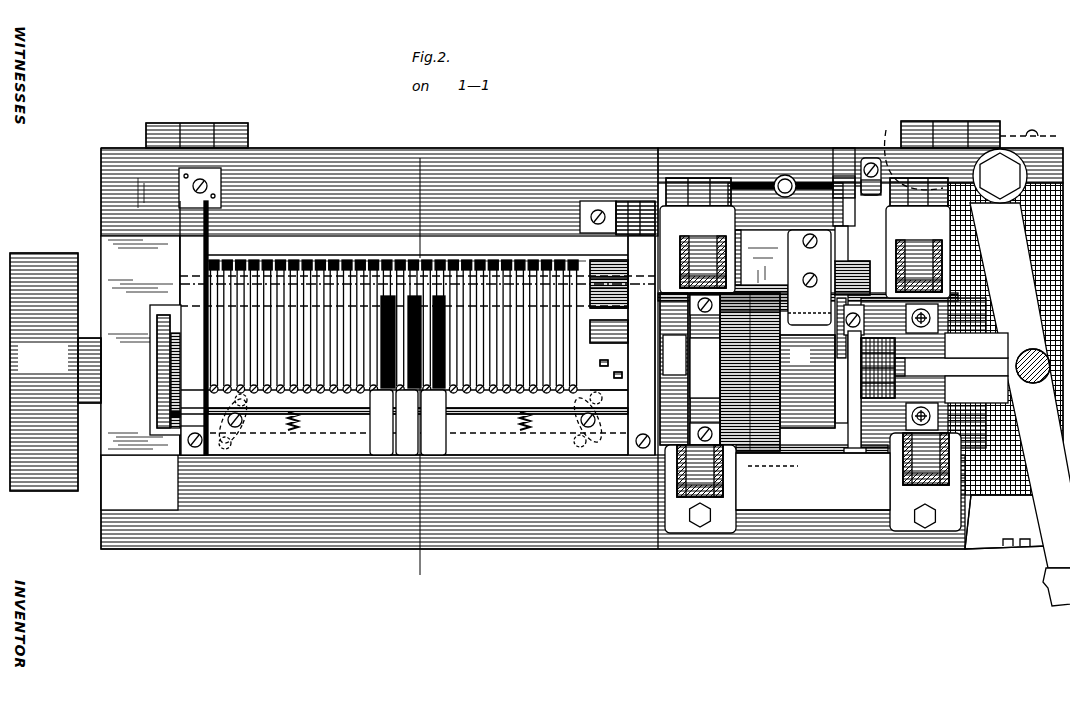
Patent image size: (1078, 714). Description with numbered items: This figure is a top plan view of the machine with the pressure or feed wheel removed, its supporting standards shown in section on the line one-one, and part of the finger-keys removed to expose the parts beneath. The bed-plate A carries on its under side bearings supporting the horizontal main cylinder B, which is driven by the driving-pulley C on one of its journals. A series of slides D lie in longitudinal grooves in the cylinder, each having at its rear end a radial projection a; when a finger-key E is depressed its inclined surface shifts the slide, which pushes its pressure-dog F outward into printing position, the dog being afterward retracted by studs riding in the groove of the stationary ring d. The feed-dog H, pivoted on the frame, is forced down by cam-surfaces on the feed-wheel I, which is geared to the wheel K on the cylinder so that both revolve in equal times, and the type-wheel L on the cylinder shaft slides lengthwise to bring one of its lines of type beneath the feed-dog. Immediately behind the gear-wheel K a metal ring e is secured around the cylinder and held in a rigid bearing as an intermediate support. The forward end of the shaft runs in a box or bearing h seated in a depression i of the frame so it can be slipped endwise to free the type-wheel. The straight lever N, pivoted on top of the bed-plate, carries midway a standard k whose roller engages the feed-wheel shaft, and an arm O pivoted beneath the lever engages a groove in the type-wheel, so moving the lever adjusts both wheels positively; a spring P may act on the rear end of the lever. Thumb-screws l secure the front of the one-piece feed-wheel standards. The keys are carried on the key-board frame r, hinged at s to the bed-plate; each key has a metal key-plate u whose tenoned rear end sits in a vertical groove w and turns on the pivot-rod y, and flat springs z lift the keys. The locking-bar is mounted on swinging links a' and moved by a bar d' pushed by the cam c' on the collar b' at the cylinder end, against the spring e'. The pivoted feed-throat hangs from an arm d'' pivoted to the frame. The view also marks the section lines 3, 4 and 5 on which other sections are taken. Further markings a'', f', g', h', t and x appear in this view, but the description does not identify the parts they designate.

The bed-plate A is at (545, 180).
The main cylinder B is at (584, 335).
The driving-pulley C is at (55, 372).
The slides D is at (622, 350).
The finger-keys E is at (408, 375).
The pressure-dog F is at (807, 389).
The feed-dog H is at (905, 367).
The feed-wheel I is at (805, 238).
The gear-wheel K is at (713, 334).
The type-wheel L is at (869, 405).
The lever N is at (1020, 377).
The arm O is at (951, 367).
The spring P is at (880, 122).
The radial projection a is at (606, 364).
The swinging links a' is at (534, 298).
The shaft a'' is at (806, 187).
The wheel or collar b' is at (152, 370).
The cam c' is at (506, 344).
The stationary ring d is at (794, 373).
The bar d' is at (441, 417).
The arm d'' is at (872, 431).
The ring or collar e is at (674, 369).
The spring e' is at (409, 420).
The screw f' is at (809, 277).
The screw g' is at (816, 294).
The box or bearing h is at (976, 389).
The nut h' is at (861, 315).
The depression i is at (976, 345).
The standard k is at (1025, 375).
The thumb-screws l is at (813, 483).
The key-board frame r is at (417, 347).
The hinge s is at (417, 311).
The screw t is at (187, 440).
The key-plate u is at (397, 326).
The vertical grooves w is at (603, 273).
The pivot bar x is at (424, 398).
The pivot-rod y is at (404, 328).
The flat springs z is at (400, 153).
The section line 3 3 is at (777, 367).
The section line 4 4 is at (842, 480).
The section line 5 5 is at (657, 300).